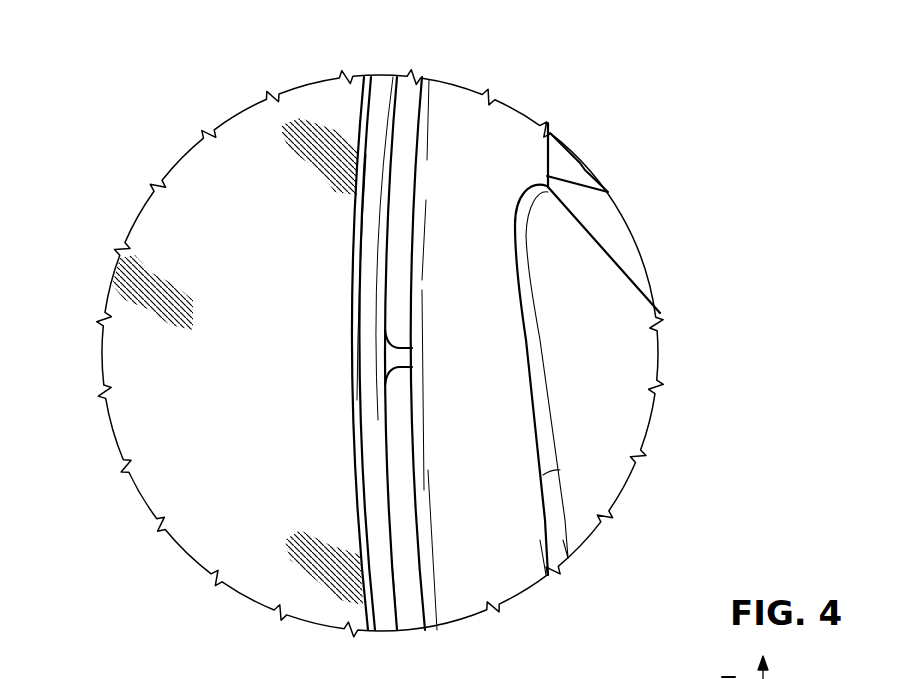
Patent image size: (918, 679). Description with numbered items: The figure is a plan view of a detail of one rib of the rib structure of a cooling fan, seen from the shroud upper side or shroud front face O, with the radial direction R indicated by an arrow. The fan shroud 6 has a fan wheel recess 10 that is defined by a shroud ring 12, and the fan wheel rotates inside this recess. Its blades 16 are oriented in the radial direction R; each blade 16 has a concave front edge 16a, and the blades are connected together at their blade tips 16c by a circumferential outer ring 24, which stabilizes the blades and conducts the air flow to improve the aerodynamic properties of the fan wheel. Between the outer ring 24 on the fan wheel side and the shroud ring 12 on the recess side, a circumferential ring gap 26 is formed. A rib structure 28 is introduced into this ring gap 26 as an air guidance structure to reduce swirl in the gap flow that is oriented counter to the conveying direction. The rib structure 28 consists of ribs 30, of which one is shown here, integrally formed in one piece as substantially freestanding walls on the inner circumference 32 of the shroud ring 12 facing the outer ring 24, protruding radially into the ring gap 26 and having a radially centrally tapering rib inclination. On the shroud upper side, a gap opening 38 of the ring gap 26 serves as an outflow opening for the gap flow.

The fan shroud 6 is at (148, 428).
The fan wheel recess 10 is at (600, 233).
The shroud ring 12 is at (370, 492).
The blade 16 is at (628, 362).
The front edge 16a is at (623, 283).
The blade tip 16c is at (547, 420).
The outer ring 24 is at (495, 568).
The ring gap 26 is at (408, 136).
The rib structure 28 is at (237, 353).
The rib 30 is at (398, 352).
The inner circumference 32 is at (396, 582).
The gap opening 38 is at (460, 321).
The shroud front face O is at (259, 168).
The radial direction R is at (90, 352).